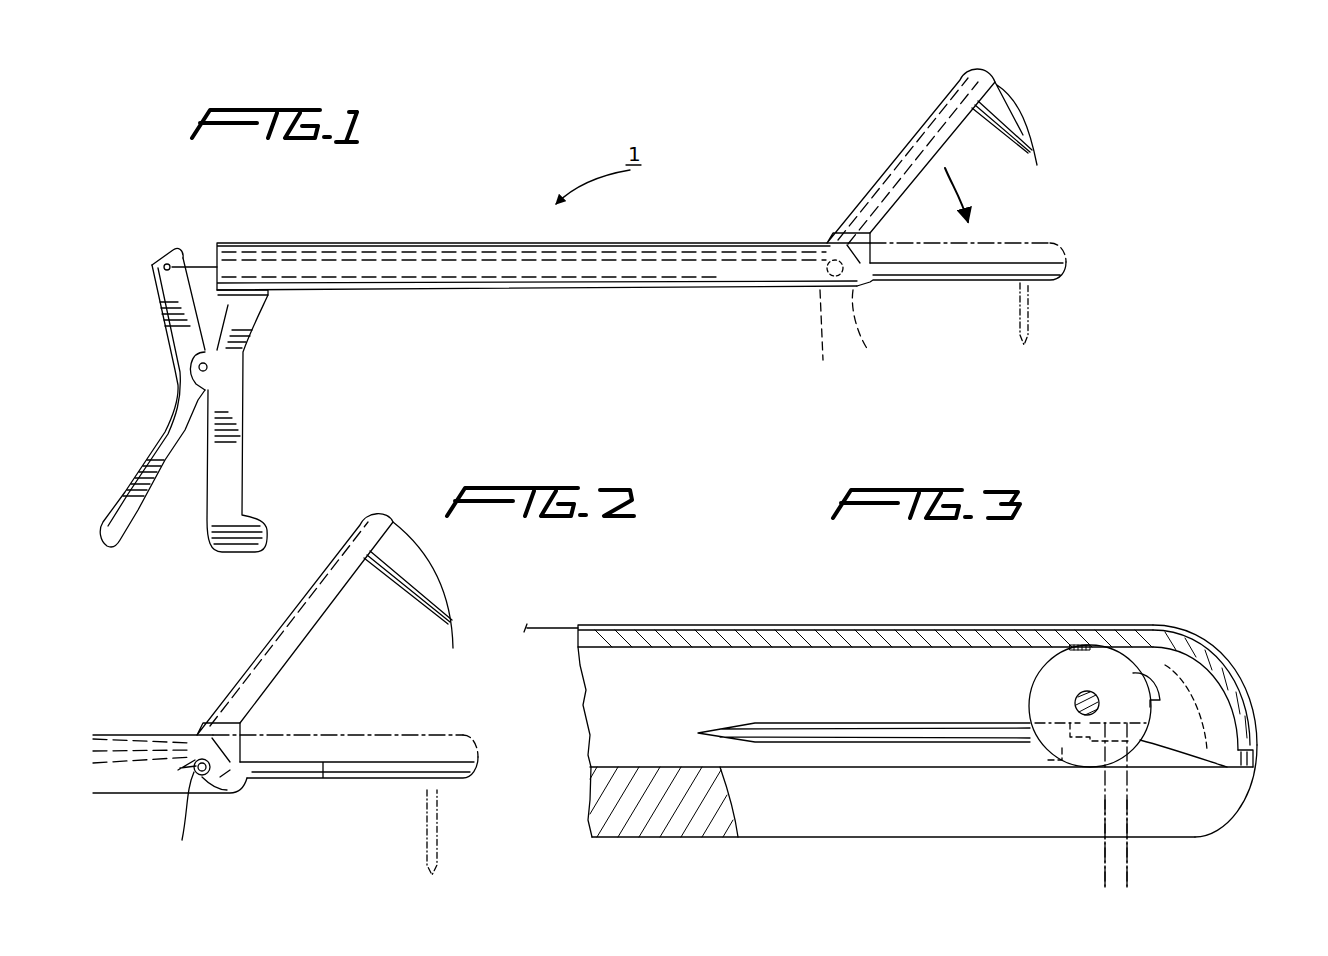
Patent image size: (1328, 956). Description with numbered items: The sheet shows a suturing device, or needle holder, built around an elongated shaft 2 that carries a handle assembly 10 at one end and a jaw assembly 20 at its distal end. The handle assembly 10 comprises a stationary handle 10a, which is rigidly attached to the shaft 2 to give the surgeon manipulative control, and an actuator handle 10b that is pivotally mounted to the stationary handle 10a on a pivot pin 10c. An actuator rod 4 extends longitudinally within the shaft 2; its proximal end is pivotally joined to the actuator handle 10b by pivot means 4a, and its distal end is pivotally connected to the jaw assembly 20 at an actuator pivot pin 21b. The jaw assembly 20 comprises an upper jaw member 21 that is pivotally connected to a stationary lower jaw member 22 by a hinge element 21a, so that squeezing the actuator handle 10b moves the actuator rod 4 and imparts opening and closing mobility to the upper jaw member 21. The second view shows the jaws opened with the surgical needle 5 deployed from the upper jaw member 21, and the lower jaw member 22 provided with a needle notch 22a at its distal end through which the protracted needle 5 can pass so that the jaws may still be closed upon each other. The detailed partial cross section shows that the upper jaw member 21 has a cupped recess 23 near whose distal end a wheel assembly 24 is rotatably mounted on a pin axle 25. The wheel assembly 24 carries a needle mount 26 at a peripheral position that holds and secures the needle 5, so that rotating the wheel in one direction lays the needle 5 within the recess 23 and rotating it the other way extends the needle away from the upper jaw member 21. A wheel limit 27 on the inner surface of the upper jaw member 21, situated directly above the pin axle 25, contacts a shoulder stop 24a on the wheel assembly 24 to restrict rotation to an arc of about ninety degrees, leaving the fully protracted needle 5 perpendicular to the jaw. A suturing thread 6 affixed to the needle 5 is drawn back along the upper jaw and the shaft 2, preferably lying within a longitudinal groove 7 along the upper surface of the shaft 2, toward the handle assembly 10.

In FIG. 1, the elongated shaft 2 is at (700, 288).
In FIG. 2, the elongated shaft 2 is at (121, 795).
In FIG. 1, the actuator rod 4 is at (193, 262).
In FIG. 2, the actuator rod 4 is at (85, 752).
In FIG. 1, the pivot means 4a is at (167, 249).
In FIG. 1, the surgical needle 5 is at (1013, 125).
In FIG. 2, the surgical needle 5 is at (407, 577).
In FIG. 3, the surgical needle 5 is at (840, 745).
In FIG. 1, the suturing thread 6 is at (1000, 84).
In FIG. 2, the suturing thread 6 is at (255, 648).
In FIG. 3, the suturing thread 6 is at (1225, 670).
In FIG. 3, the longitudinal groove 7 is at (938, 625).
In FIG. 1, the handle assembly 10 is at (195, 377).
In FIG. 1, the stationary handle 10a is at (228, 510).
In FIG. 1, the actuator handle 10b is at (130, 491).
In FIG. 1, the pivot pin 10c is at (208, 367).
In FIG. 1, the jaw assembly 20 is at (920, 213).
In FIG. 2, the jaw assembly 20 is at (287, 690).
In FIG. 1, the upper jaw member 21 is at (862, 202).
In FIG. 2, the upper jaw member 21 is at (212, 702).
In FIG. 1, the hinge element 21a is at (883, 329).
In FIG. 2, the hinge element 21a is at (228, 795).
In FIG. 1, the actuator pivot pin 21b is at (825, 326).
In FIG. 2, the actuator pivot pin 21b is at (186, 813).
In FIG. 1, the lower jaw member 22 is at (985, 285).
In FIG. 2, the lower jaw member 22 is at (376, 783).
In FIG. 3, the lower jaw member 22 is at (935, 838).
In FIG. 2, the needle notch 22a is at (425, 798).
In FIG. 3, the needle notch 22a is at (1125, 825).
In FIG. 3, the cupped recess 23 is at (830, 660).
In FIG. 3, the wheel assembly 24 is at (1083, 726).
In FIG. 3, the shoulder stop 24a is at (1140, 700).
In FIG. 3, the pin axle 25 is at (1093, 700).
In FIG. 3, the needle mount 26 is at (1060, 740).
In FIG. 3, the wheel limit 27 is at (1040, 653).